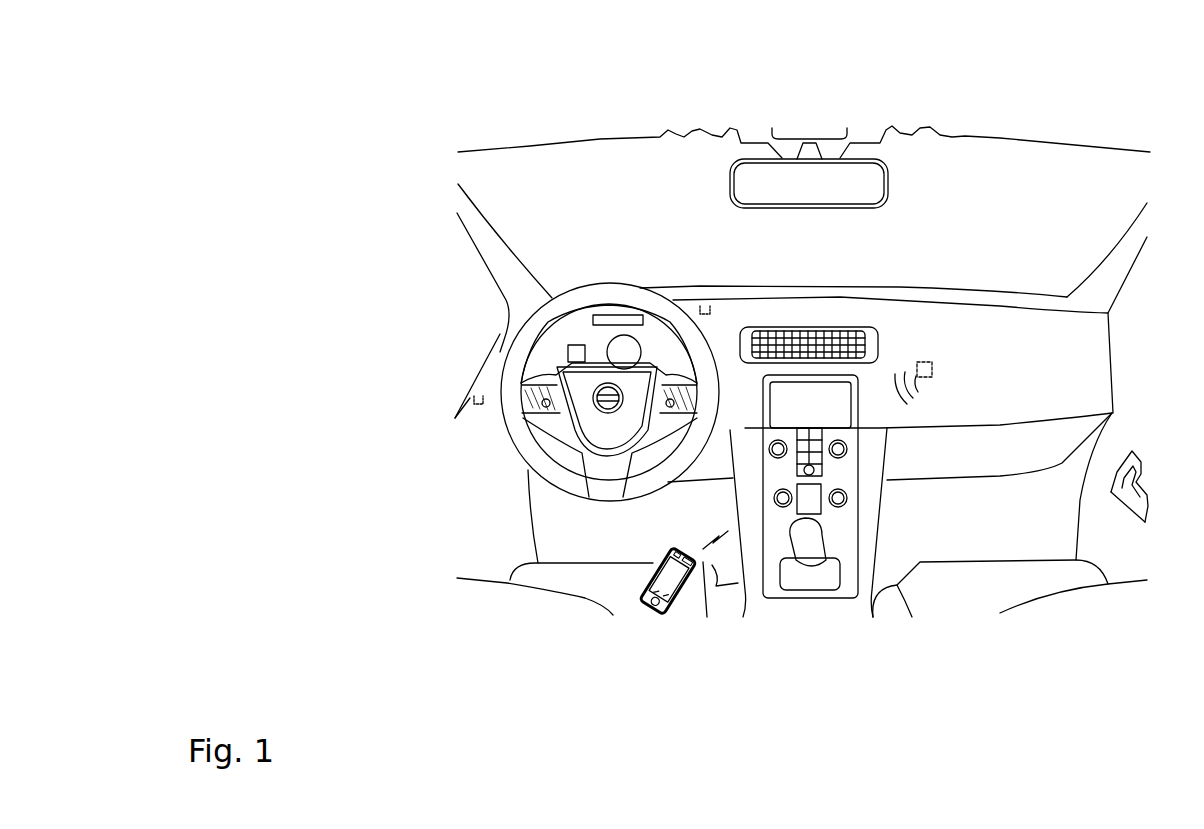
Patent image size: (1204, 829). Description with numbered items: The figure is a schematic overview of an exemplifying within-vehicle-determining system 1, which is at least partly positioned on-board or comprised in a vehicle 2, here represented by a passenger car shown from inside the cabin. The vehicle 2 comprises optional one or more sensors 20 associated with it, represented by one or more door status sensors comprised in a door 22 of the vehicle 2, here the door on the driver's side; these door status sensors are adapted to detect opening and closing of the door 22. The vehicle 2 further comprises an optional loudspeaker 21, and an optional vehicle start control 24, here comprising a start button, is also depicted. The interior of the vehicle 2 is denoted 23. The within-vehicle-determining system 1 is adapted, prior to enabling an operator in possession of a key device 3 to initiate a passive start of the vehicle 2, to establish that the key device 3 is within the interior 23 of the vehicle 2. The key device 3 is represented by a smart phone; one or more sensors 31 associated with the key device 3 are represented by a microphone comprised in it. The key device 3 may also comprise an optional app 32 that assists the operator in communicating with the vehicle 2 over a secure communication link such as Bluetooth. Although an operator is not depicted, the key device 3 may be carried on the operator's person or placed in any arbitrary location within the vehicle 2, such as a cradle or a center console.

The within-vehicle-determining system 1 is at (384, 152).
The vehicle 2 is at (1046, 111).
The key device 3 is at (640, 621).
The sensors 20 is at (478, 395).
The loudspeaker 21 is at (931, 366).
The door 22 is at (459, 420).
The interior 23 is at (856, 677).
The vehicle start control 24 is at (703, 305).
The sensors 31 is at (675, 534).
The app 32 is at (675, 622).